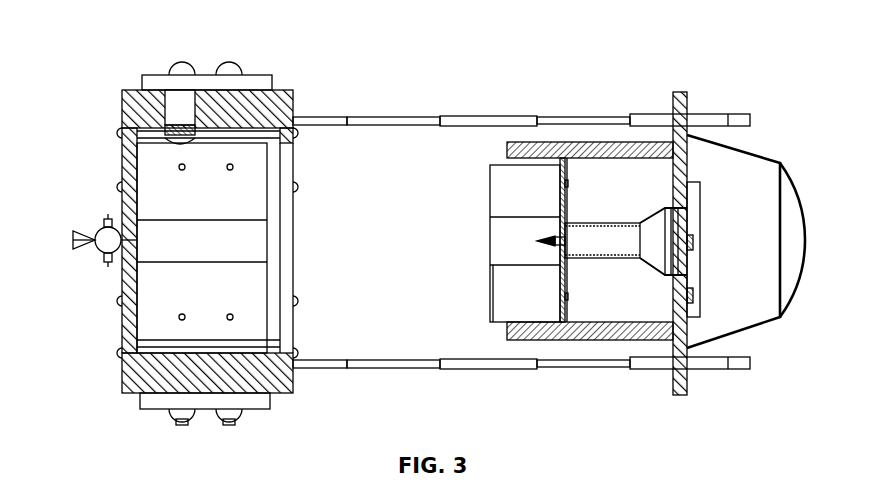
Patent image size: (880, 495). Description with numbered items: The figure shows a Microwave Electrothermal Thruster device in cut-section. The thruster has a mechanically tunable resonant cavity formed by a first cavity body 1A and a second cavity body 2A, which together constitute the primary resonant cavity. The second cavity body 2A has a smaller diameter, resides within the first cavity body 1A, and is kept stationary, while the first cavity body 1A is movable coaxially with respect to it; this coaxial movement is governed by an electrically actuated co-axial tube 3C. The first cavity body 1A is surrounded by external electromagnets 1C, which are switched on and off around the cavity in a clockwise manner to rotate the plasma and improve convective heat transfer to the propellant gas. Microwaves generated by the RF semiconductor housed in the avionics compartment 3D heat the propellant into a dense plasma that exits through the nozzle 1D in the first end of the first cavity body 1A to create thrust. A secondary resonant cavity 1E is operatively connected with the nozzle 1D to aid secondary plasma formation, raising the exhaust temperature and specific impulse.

The first cavity body 1A is at (122, 92).
The external electromagnets 1C is at (148, 187).
The nozzle 1D is at (80, 234).
The secondary resonant cavity 1E is at (107, 250).
The co-axial tube 3C is at (413, 116).
The second cavity body 2A is at (608, 142).
The avionics compartment 3D is at (735, 187).